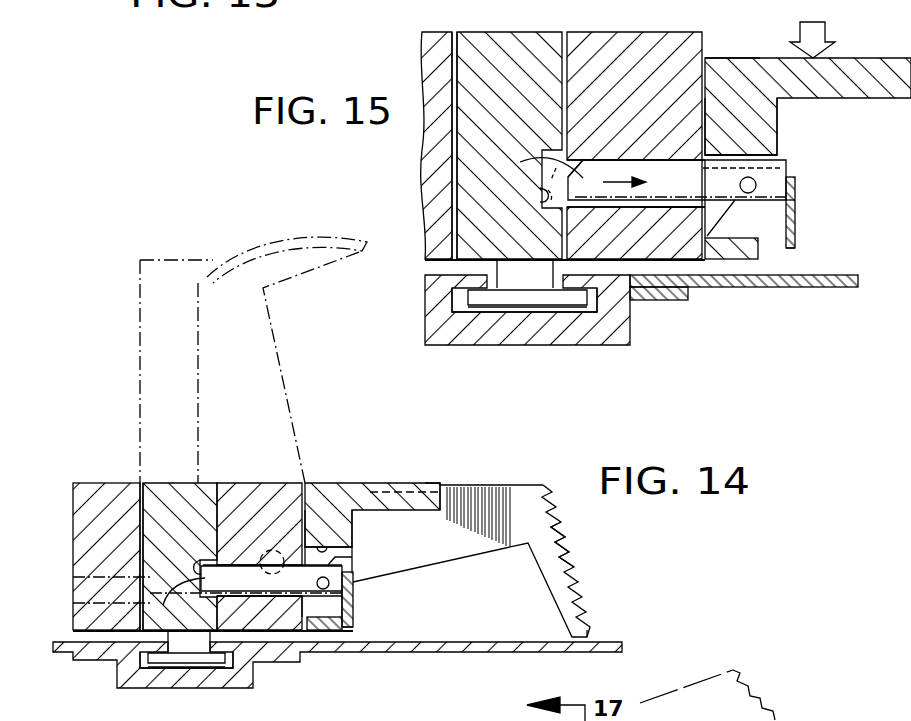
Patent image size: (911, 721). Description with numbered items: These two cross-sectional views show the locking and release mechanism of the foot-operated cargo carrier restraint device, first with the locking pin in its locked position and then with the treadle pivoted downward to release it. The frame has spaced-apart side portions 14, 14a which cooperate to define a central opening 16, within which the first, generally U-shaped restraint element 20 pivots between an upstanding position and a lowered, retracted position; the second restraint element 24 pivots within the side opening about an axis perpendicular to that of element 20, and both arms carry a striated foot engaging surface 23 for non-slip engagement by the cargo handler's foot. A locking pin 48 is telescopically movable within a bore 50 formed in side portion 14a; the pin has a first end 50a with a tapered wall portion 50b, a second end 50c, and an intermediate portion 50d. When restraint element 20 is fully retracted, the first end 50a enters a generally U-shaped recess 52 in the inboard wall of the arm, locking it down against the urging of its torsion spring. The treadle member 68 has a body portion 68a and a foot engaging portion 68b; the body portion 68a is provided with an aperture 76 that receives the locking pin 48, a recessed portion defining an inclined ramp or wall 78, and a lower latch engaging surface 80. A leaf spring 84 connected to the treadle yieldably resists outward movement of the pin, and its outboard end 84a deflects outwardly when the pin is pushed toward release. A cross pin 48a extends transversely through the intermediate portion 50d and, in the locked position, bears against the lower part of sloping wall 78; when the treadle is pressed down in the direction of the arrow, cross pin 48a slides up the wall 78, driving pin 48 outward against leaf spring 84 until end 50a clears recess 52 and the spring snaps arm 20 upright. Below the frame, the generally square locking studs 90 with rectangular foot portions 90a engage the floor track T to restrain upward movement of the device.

In FIG. 15, the side portion 14 is at (418, 47).
In FIG. 14, the side portion 14 is at (85, 483).
In FIG. 15, the side portion 14a is at (650, 37).
In FIG. 14, the side portion 14a is at (243, 483).
In FIG. 15, the central opening 16 is at (456, 50).
In FIG. 14, the central opening 16 is at (142, 488).
In FIG. 15, the first restraint element 20 is at (522, 42).
In FIG. 14, the first restraint element 20 is at (172, 474).
In FIG. 14, the striated foot engaging surface 23 is at (590, 573).
In FIG. 14, the second restraint element 24 is at (253, 236).
In FIG. 15, the locking pin 48 is at (656, 160).
In FIG. 14, the locking pin 48 is at (292, 565).
In FIG. 15, the cross pin 48a is at (757, 184).
In FIG. 14, the cross pin 48a is at (333, 582).
In FIG. 15, the bore 50 is at (618, 164).
In FIG. 14, the bore 50 is at (236, 568).
In FIG. 15, the first end 50a is at (578, 195).
In FIG. 14, the first end 50a is at (222, 588).
In FIG. 15, the tapered wall portion 50b is at (522, 162).
In FIG. 14, the tapered wall portion 50b is at (185, 612).
In FIG. 15, the second end 50c is at (797, 208).
In FIG. 14, the second end 50c is at (355, 609).
In FIG. 15, the intermediate portion 50d is at (663, 193).
In FIG. 15, the U-shaped recess 52 is at (540, 197).
In FIG. 14, the U-shaped recess 52 is at (202, 560).
In FIG. 15, the treadle member 68 is at (868, 52).
In FIG. 14, the treadle member 68 is at (393, 478).
In FIG. 15, the body portion 68a is at (757, 123).
In FIG. 14, the body portion 68a is at (316, 507).
In FIG. 15, the foot engaging portion 68b is at (751, 57).
In FIG. 14, the foot engaging portion 68b is at (434, 484).
In FIG. 14, the aperture 76 is at (320, 546).
In FIG. 15, the inclined ramp or wall 78 is at (721, 219).
In FIG. 14, the inclined ramp or wall 78 is at (337, 562).
In FIG. 15, the lower latch engaging surface 80 is at (740, 260).
In FIG. 14, the lower latch engaging surface 80 is at (330, 631).
In FIG. 15, the leaf spring 84 is at (806, 192).
In FIG. 15, the outboard end 84a is at (797, 240).
In FIG. 14, the outboard end 84a is at (352, 631).
In FIG. 15, the locking stud 90 is at (537, 283).
In FIG. 14, the locking stud 90 is at (193, 641).
In FIG. 15, the foot portion 90a is at (483, 313).
In FIG. 14, the foot portion 90a is at (160, 661).
In FIG. 15, the track T is at (598, 346).
In FIG. 14, the track T is at (117, 688).